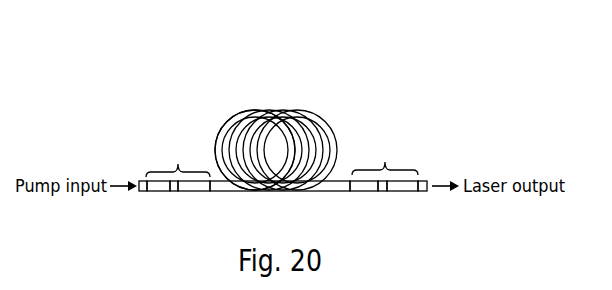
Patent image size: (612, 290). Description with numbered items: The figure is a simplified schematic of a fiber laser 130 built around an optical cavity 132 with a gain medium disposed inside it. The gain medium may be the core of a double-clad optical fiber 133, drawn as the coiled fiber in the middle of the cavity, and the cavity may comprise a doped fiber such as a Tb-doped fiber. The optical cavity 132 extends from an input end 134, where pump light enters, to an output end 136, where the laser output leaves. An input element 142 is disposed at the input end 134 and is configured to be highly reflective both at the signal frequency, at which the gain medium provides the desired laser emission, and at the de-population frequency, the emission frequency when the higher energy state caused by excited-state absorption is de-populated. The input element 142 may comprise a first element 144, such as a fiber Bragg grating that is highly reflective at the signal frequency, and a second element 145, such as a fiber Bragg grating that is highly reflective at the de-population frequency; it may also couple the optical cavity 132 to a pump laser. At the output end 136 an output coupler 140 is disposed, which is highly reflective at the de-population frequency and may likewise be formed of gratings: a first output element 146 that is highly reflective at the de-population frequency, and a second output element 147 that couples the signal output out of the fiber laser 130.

The fiber laser 130 is at (122, 36).
The optical cavity 132 is at (353, 89).
The double-clad optical fiber 133 is at (236, 110).
The input end 134 is at (139, 181).
The output end 136 is at (428, 181).
The output coupler 140 is at (385, 158).
The input element 142 is at (178, 159).
The first element 144 is at (168, 191).
The second element 145 is at (210, 191).
The first output element 146 is at (366, 191).
The second output element 147 is at (414, 191).